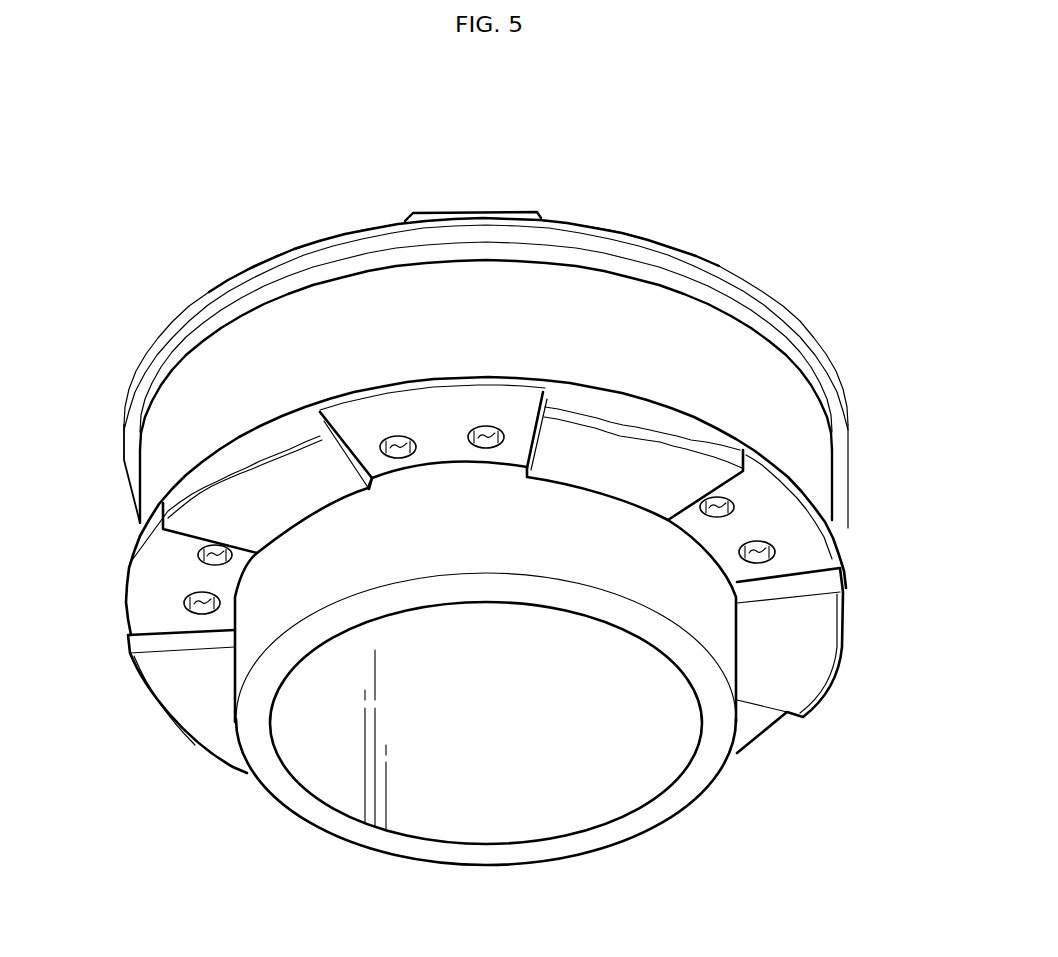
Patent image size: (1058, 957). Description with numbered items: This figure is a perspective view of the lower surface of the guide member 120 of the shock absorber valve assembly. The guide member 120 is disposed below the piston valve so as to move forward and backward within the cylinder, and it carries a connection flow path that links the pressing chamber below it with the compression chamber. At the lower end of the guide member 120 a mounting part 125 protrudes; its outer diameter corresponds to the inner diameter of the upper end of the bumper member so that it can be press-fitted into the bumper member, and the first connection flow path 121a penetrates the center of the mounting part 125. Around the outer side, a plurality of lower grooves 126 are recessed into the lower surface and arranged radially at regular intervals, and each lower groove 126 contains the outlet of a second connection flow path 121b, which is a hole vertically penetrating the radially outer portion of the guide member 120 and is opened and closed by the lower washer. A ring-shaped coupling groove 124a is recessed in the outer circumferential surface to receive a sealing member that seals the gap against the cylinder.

The guide member 120 is at (746, 139).
The first connection flow path 121a is at (485, 789).
The second connection flow path 121b is at (485, 428).
The coupling groove 124a is at (152, 472).
The mounting part 125 is at (712, 623).
The lower groove 126 is at (500, 402).